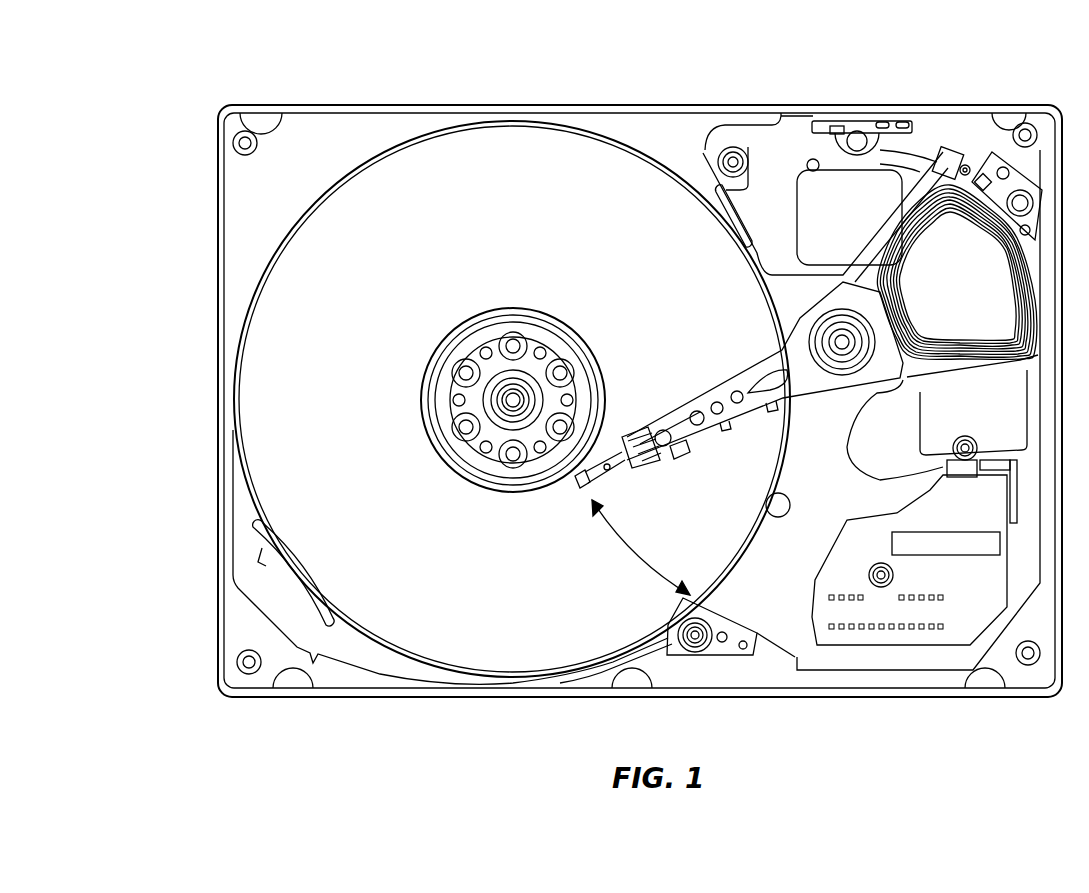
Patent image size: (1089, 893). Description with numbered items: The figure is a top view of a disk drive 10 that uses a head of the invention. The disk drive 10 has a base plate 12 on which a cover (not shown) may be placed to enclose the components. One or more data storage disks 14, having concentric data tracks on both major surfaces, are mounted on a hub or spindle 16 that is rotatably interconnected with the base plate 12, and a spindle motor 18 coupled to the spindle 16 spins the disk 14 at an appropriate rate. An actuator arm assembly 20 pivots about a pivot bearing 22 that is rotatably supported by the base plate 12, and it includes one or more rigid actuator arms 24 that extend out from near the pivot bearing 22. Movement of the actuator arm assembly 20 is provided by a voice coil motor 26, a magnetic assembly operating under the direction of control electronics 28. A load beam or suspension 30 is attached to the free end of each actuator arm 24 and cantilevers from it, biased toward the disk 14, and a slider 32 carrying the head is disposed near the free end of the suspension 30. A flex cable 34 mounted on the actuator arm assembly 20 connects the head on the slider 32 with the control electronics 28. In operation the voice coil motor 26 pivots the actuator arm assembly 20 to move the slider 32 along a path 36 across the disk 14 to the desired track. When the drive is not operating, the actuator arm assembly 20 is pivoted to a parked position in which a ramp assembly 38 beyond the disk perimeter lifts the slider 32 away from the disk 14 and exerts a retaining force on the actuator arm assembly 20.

The disk drive 10 is at (150, 185).
The base plate 12 is at (640, 401).
The data storage disk 14 is at (522, 150).
The spindle 16 is at (537, 312).
The spindle motor 18 is at (493, 377).
The actuator arm assembly 20 is at (729, 362).
The pivot bearing 22 is at (837, 363).
The actuator arm 24 is at (716, 438).
The voice coil motor 26 is at (957, 272).
The control electronics 28 is at (888, 640).
The suspension 30 is at (615, 452).
The slider 32 is at (577, 490).
The flex cable 34 is at (853, 478).
The path 36 is at (625, 555).
The ramp assembly 38 is at (718, 640).